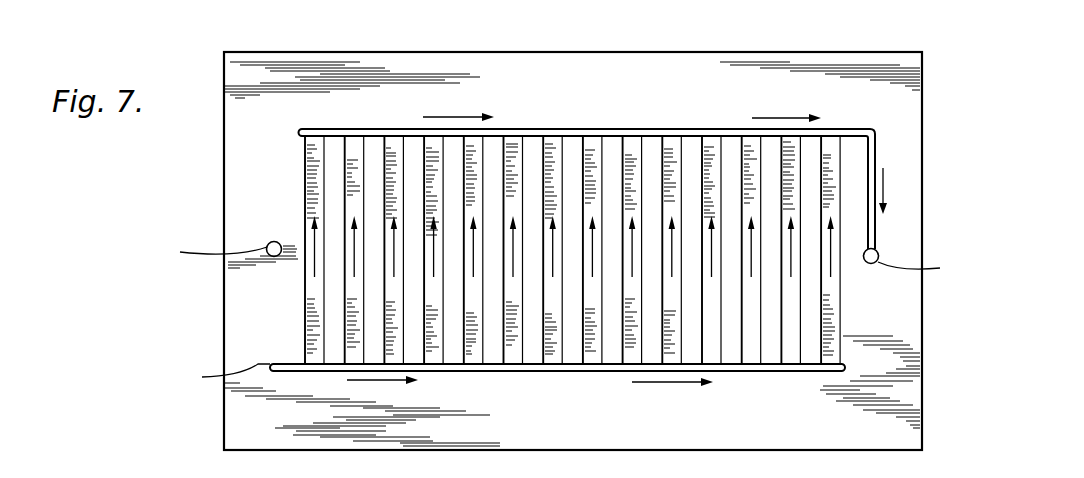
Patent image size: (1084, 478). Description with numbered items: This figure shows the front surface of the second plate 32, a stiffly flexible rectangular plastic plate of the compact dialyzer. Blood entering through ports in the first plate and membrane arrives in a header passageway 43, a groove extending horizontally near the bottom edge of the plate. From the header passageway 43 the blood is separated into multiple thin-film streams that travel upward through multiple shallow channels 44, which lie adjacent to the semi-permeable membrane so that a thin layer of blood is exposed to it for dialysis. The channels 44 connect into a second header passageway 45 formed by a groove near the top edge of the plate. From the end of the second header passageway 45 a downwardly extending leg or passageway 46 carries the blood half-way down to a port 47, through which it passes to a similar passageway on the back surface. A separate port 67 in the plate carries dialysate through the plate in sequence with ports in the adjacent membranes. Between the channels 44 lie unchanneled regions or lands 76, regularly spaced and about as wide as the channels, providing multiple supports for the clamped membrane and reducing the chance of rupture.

The second plate 32 is at (880, 60).
The header passageway 43 is at (440, 367).
The channels 44 is at (512, 355).
The second header passageway 45 is at (566, 132).
The downwardly extending leg or passageway 46 is at (872, 157).
The port 47 is at (878, 252).
The port 67 is at (272, 242).
The unchanneled regions or lands 76 is at (650, 148).